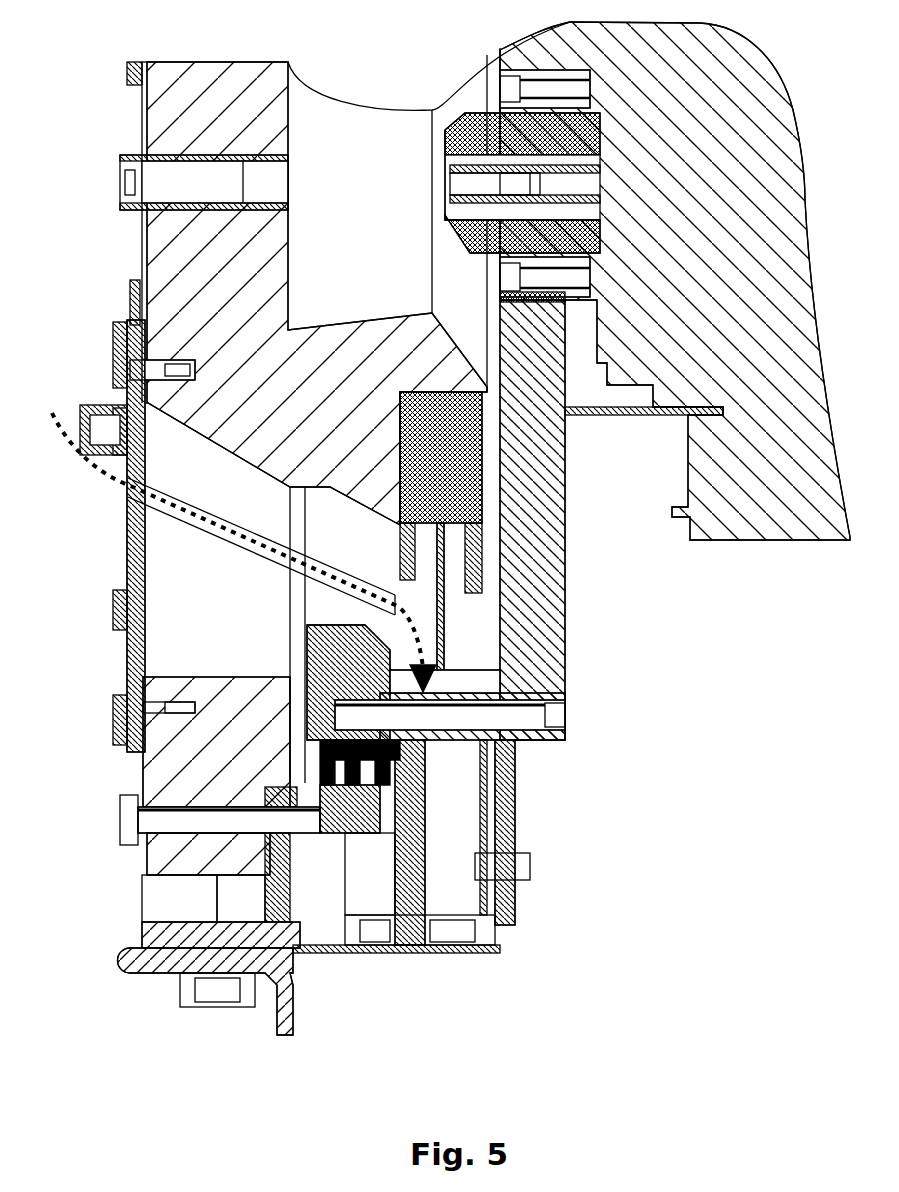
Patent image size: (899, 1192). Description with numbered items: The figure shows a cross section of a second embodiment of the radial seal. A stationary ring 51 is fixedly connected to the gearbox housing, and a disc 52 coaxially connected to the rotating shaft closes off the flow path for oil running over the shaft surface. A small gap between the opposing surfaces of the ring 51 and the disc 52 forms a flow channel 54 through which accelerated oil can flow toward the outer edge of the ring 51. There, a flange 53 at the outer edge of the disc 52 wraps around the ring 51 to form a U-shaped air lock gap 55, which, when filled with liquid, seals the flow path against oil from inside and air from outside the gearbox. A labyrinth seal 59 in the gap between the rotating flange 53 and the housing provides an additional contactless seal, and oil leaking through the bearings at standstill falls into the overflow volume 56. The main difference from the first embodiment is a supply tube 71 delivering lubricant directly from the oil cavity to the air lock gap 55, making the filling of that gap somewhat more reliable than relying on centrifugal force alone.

The ring 51 is at (442, 652).
The disc 52 is at (565, 540).
The flange 53 is at (305, 660).
The flow channel 54 is at (492, 518).
The air lock gap 55 is at (458, 680).
The overflow volume 56 is at (163, 580).
The labyrinth seal 59 is at (345, 787).
The supply tube 71 is at (167, 487).